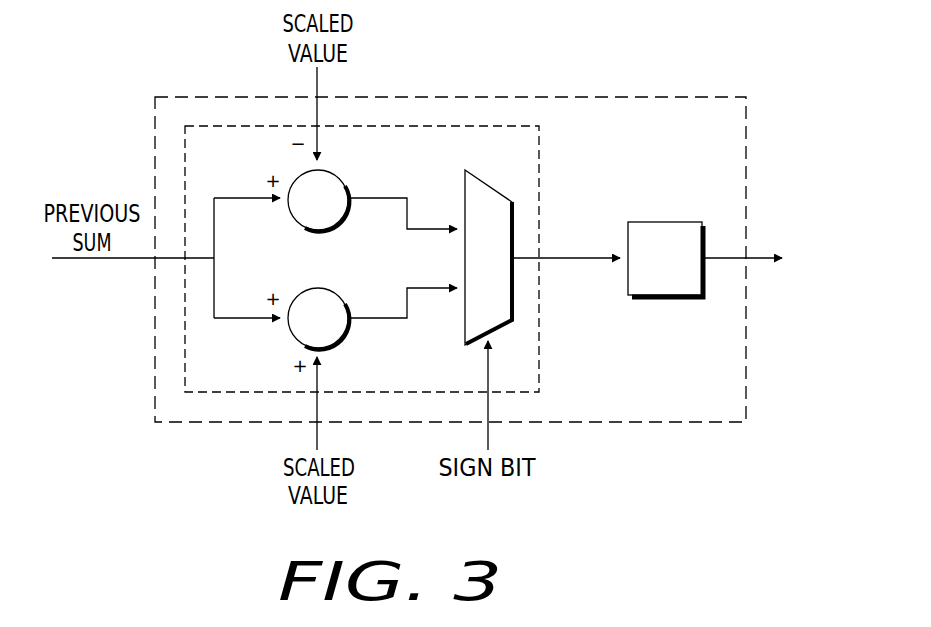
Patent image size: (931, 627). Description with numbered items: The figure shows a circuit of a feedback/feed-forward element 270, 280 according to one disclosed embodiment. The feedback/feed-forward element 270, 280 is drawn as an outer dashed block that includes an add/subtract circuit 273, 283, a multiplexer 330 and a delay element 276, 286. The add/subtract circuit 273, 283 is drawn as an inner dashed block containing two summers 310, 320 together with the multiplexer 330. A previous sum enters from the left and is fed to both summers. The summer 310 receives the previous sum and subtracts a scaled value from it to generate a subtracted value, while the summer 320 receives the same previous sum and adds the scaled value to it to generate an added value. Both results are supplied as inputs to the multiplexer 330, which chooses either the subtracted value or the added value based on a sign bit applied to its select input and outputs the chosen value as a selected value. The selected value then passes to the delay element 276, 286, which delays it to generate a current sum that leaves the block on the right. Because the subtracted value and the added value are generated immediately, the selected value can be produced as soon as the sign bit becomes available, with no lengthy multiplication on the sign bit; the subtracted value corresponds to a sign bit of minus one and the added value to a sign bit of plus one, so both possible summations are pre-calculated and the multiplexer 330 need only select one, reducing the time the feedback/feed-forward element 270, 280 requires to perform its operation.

The feedback/feed-forward element 270 is at (450, 289).
The feedback/feed-forward element 280 is at (619, 428).
The add/subtract circuit 273 is at (427, 259).
The add/subtract circuit 283 is at (541, 148).
The delay element 276 is at (672, 289).
The delay element 286 is at (648, 302).
The summer 310 is at (342, 170).
The summer 320 is at (333, 287).
The multiplexer 330 is at (465, 336).